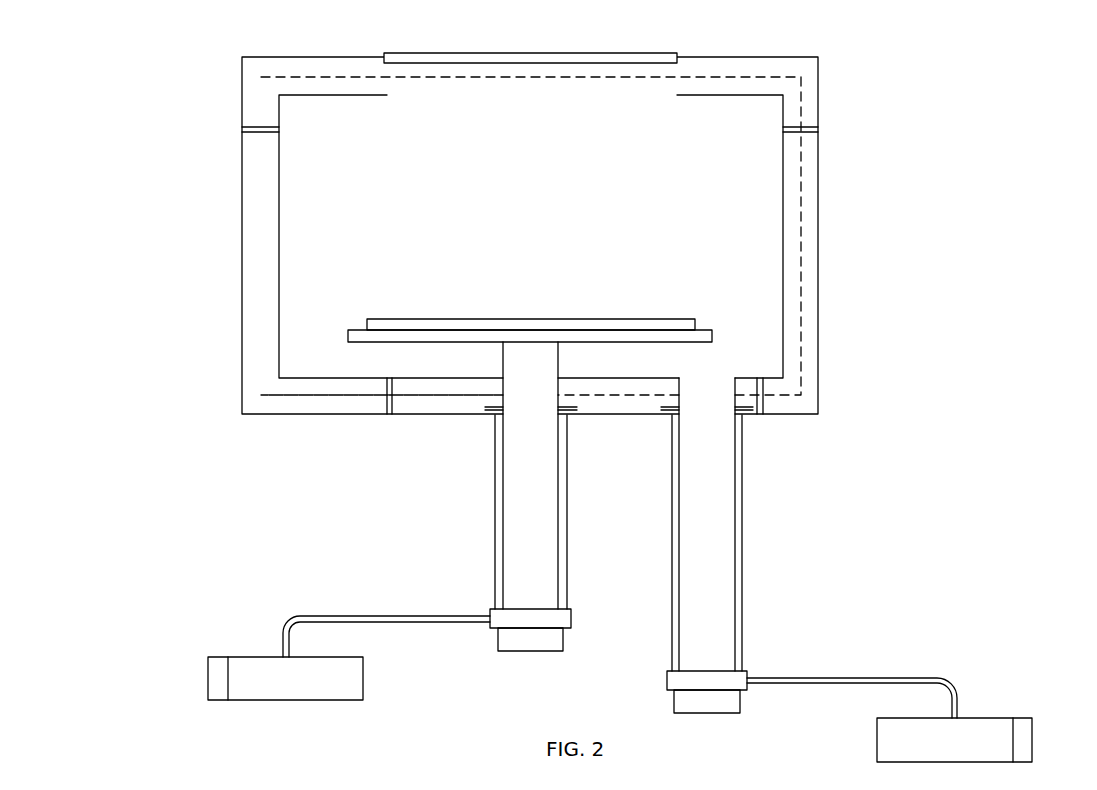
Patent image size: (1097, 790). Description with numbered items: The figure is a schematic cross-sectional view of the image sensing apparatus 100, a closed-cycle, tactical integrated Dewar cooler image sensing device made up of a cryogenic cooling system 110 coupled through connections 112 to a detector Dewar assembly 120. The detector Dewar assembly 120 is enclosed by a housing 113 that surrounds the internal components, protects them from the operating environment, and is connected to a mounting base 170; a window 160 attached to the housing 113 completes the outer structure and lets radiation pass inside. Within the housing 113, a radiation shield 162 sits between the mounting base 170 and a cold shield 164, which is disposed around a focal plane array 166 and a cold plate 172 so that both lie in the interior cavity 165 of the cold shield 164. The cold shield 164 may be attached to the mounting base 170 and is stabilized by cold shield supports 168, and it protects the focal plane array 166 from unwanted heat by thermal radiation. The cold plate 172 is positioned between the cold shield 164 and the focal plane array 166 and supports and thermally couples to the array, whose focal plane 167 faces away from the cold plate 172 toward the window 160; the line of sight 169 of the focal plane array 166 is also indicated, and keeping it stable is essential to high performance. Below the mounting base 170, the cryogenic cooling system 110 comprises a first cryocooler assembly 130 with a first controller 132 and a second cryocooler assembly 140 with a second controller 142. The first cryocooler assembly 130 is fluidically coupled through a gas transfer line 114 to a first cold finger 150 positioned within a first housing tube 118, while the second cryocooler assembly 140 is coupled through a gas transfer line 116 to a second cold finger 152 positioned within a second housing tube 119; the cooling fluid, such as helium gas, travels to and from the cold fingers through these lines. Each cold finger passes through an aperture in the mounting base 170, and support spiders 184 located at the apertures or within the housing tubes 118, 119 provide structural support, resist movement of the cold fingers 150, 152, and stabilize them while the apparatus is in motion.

The image sensing apparatus 100 is at (990, 82).
The cryogenic cooling system 110 is at (133, 670).
The connections 112 is at (405, 527).
The housing 113 is at (818, 100).
The gas transfer line 114 is at (390, 612).
The gas transfer line 116 is at (857, 677).
The first housing tube 118 is at (568, 575).
The second housing tube 119 is at (742, 637).
The detector Dewar assembly 120 is at (183, 238).
The first cryocooler assembly 130 is at (363, 672).
The first controller 132 is at (215, 657).
The second cryocooler assembly 140 is at (877, 737).
The second controller 142 is at (1022, 718).
The first cold finger 150 is at (502, 535).
The second cold finger 152 is at (678, 598).
The window 160 is at (627, 52).
The radiation shield 162 is at (801, 196).
The cold shield 164 is at (783, 228).
The interior cavity 165 is at (710, 151).
The focal plane array 166 is at (697, 320).
The focal plane 167 is at (540, 319).
The cold shield supports 168 is at (245, 135).
The line of sight 169 is at (380, 228).
The mounting base 170 is at (455, 420).
The cold plate 172 is at (713, 338).
The support spiders 184 is at (497, 415).